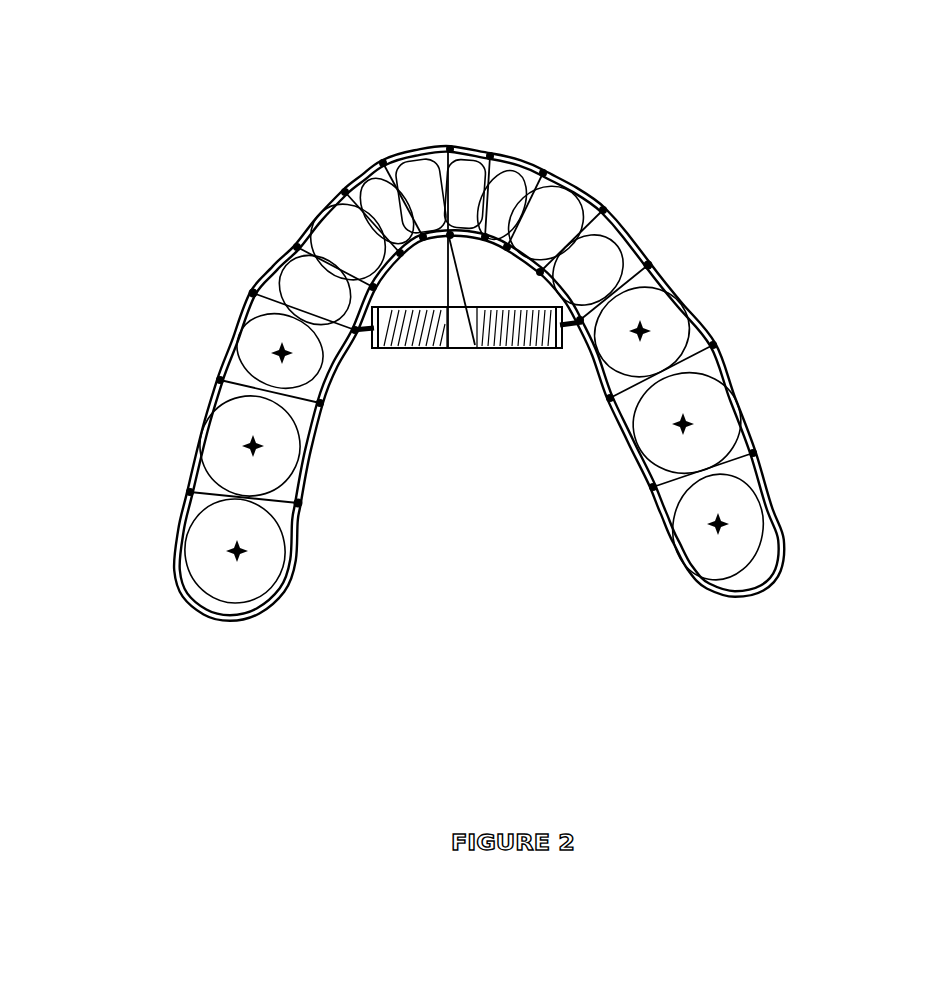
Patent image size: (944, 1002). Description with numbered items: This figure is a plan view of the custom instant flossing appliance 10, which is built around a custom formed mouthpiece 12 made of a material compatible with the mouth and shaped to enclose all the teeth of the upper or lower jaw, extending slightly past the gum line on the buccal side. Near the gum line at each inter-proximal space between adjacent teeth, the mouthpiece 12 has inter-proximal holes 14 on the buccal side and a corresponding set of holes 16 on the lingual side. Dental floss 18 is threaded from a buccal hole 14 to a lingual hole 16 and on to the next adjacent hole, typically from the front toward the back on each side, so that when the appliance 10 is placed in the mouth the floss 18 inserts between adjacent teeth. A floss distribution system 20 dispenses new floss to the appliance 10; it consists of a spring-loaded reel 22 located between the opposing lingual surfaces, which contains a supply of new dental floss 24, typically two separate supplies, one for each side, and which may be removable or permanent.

The custom instant flossing appliance 10 is at (387, 133).
The custom formed mouthpiece 12 is at (342, 233).
The inter-proximal holes 14 is at (252, 294).
The lingual side holes 16 is at (300, 505).
The dental floss 18 is at (637, 256).
The floss distribution system 20 is at (378, 360).
The spring-loaded reel 22 is at (452, 347).
The supply of new dental floss 24 is at (537, 340).